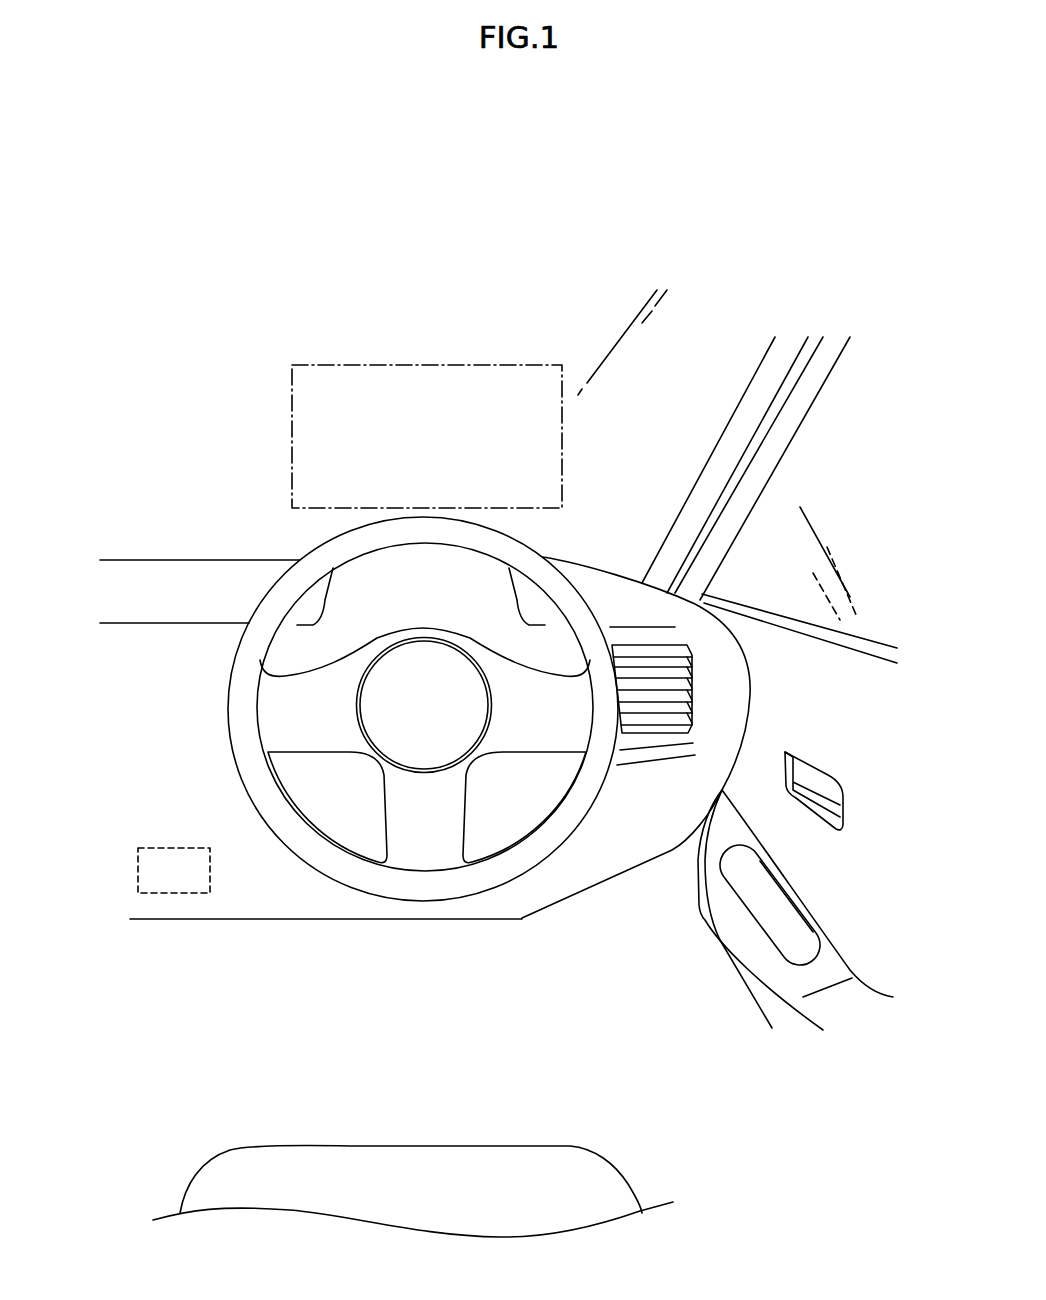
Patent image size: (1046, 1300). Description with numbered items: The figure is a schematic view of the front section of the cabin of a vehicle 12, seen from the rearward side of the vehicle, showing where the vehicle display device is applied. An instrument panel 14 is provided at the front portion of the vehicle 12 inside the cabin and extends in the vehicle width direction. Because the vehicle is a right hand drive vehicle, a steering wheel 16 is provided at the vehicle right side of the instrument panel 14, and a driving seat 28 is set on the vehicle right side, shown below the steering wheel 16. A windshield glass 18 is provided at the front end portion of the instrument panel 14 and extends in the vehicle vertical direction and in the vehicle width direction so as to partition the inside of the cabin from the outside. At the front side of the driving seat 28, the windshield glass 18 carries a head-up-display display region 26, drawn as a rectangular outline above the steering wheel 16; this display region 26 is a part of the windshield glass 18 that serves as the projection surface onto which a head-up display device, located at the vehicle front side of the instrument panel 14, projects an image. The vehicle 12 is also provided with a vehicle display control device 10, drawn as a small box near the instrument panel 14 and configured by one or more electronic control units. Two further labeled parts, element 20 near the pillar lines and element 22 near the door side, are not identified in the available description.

The vehicle display control device 10 is at (182, 893).
The vehicle 12 is at (350, 272).
The instrument panel 14 is at (602, 881).
The steering wheel 16 is at (588, 605).
The windshield glass 18 is at (673, 445).
The windshield 20 is at (750, 388).
The side door 22 is at (877, 607).
The head-up-display display region 26 is at (388, 364).
The driving seat 28 is at (562, 1145).